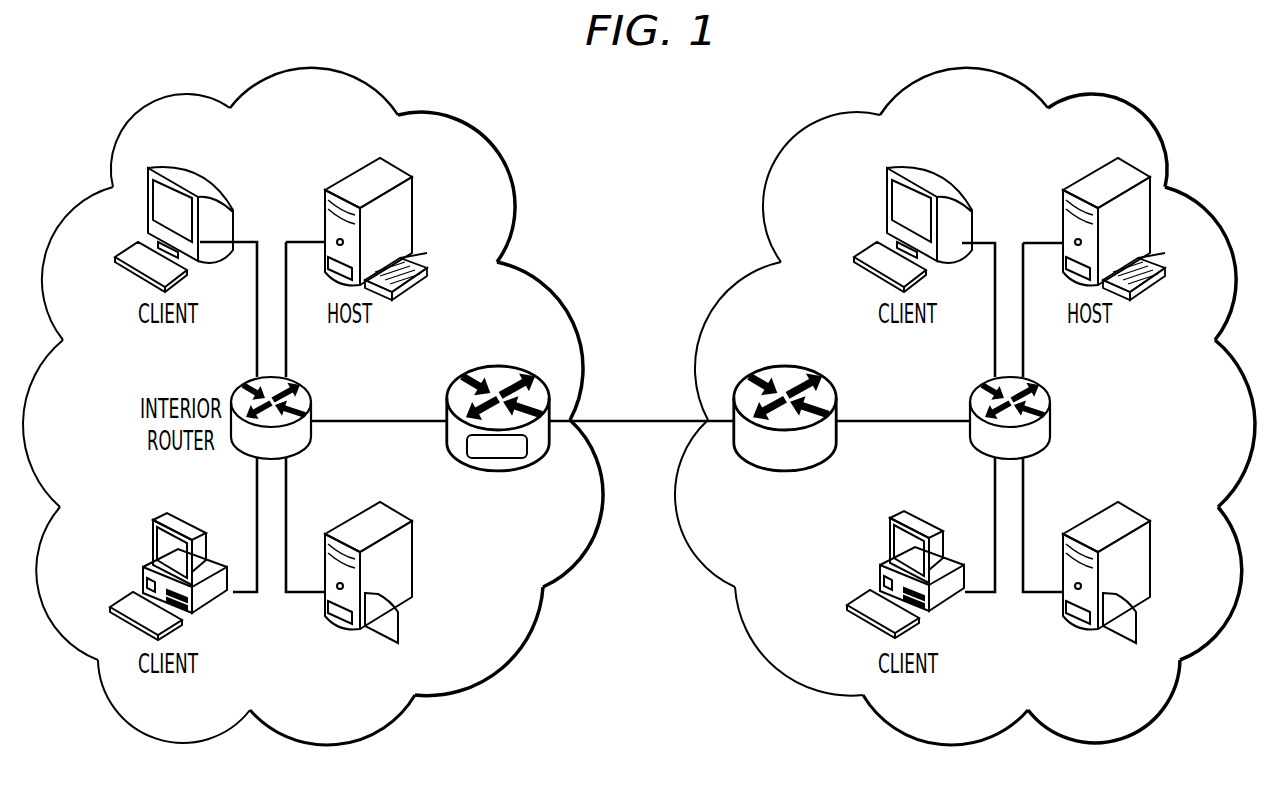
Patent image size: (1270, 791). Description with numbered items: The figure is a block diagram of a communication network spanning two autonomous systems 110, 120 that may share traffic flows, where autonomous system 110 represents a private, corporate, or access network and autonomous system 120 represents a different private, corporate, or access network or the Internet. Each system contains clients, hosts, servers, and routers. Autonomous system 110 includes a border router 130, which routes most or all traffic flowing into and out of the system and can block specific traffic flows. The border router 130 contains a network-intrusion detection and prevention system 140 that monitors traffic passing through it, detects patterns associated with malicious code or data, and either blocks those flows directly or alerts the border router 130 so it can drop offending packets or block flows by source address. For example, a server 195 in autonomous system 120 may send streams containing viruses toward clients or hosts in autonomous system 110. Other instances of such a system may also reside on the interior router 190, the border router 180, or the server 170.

The autonomous system 110 is at (385, 100).
The autonomous system 120 is at (1017, 80).
The border router 130 is at (453, 382).
The network-intrusion detection and prevention system (NIDPS) 140 is at (465, 440).
The server 170 is at (413, 560).
The border router 180 is at (833, 383).
The interior router 190 is at (1043, 385).
The server 195 is at (1133, 512).